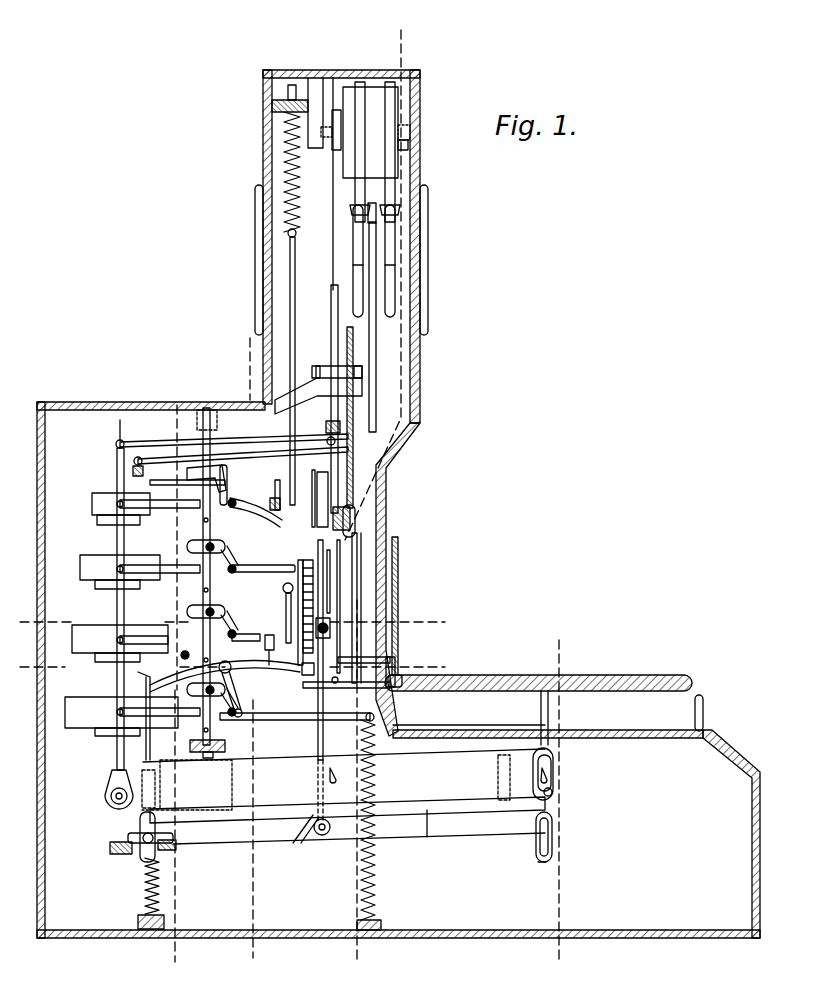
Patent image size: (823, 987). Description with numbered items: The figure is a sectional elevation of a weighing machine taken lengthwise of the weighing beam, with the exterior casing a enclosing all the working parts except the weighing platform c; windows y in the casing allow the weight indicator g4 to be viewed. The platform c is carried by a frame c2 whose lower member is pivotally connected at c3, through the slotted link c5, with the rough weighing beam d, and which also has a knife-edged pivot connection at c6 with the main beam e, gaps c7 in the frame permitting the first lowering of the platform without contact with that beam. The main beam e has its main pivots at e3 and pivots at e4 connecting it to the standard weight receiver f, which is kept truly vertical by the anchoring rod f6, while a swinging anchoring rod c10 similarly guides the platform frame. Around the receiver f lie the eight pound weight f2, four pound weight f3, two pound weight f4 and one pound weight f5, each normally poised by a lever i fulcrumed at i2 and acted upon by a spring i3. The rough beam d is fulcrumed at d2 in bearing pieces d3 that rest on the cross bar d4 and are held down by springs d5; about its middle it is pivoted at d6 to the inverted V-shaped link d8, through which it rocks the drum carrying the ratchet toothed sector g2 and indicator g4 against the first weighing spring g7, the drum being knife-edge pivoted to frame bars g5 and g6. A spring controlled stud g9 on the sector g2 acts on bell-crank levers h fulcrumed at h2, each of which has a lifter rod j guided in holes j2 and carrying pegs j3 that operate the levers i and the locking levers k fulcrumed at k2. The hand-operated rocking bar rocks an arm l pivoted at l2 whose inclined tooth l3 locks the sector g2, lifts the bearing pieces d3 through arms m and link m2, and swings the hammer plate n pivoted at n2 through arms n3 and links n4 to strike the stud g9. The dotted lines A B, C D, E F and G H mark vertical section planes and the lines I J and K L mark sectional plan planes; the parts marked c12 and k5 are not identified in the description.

The exterior casing a is at (60, 404).
The weighing platform c is at (593, 682).
The frame c2 is at (550, 722).
The pivot connection c3 is at (540, 862).
The slotted link c5 is at (552, 840).
The knife-edged pivot connection c6 is at (555, 766).
The gaps c7 is at (548, 777).
The swinging anchoring rod c10 is at (252, 452).
The rod c12 is at (138, 457).
The rough weighing beam d is at (110, 848).
The fulcrum d2 is at (140, 850).
The bearing pieces d3 is at (140, 822).
The cross bar d4 is at (170, 848).
The springs d5 is at (160, 898).
The knife-edge pivot d6 is at (320, 836).
The inverted V-shaped link d8 is at (298, 840).
The main weighing beam e is at (344, 762).
The main pivots e3 is at (328, 775).
The pivots e4 is at (108, 800).
The standard weight receiver f is at (117, 742).
The eight pound standard weight f2 is at (72, 688).
The four pound standard weight f3 is at (80, 628).
The two pound standard weight f4 is at (88, 560).
The one pound standard weight f5 is at (98, 495).
The anchoring rod f6 is at (170, 408).
The ratchet toothed sector g2 is at (399, 560).
The indicator g4 is at (376, 252).
The frame bar g5 is at (272, 503).
The frame bar g6 is at (356, 512).
The first weighing spring g7 is at (290, 130).
The spring controlled stud g9 is at (328, 628).
The bell-crank lever h is at (266, 636).
The fulcrum h2 is at (297, 560).
The lever i is at (170, 505).
The fulcrum i2 is at (200, 772).
The spring i3 is at (381, 825).
The lifter rod j is at (372, 208).
The guiding holes j2 is at (385, 100).
The pegs j3 is at (392, 150).
The locking lever k is at (186, 484).
The fulcrum k2 is at (234, 492).
The arm k5 is at (250, 680).
The arm l is at (283, 605).
The pivot l2 is at (120, 712).
The inclined tooth l3 is at (326, 683).
The arm m is at (152, 730).
The link m2 is at (142, 760).
The hammer plate n is at (395, 662).
The pivot n2 is at (357, 530).
The arms n3 is at (250, 721).
The links n4 is at (304, 688).
The windows y is at (257, 290).
The dotted section line A is at (566, 732).
The dotted section line B is at (564, 912).
The dotted section line C is at (385, 273).
The dotted section line D is at (363, 793).
The dotted section line E is at (239, 356).
The dotted section line F is at (237, 843).
The dotted section line G is at (163, 529).
The dotted section line H is at (158, 838).
The dotted section line I is at (100, 607).
The dotted section line J is at (387, 608).
The dotted section line K is at (116, 653).
The dotted section line L is at (387, 644).